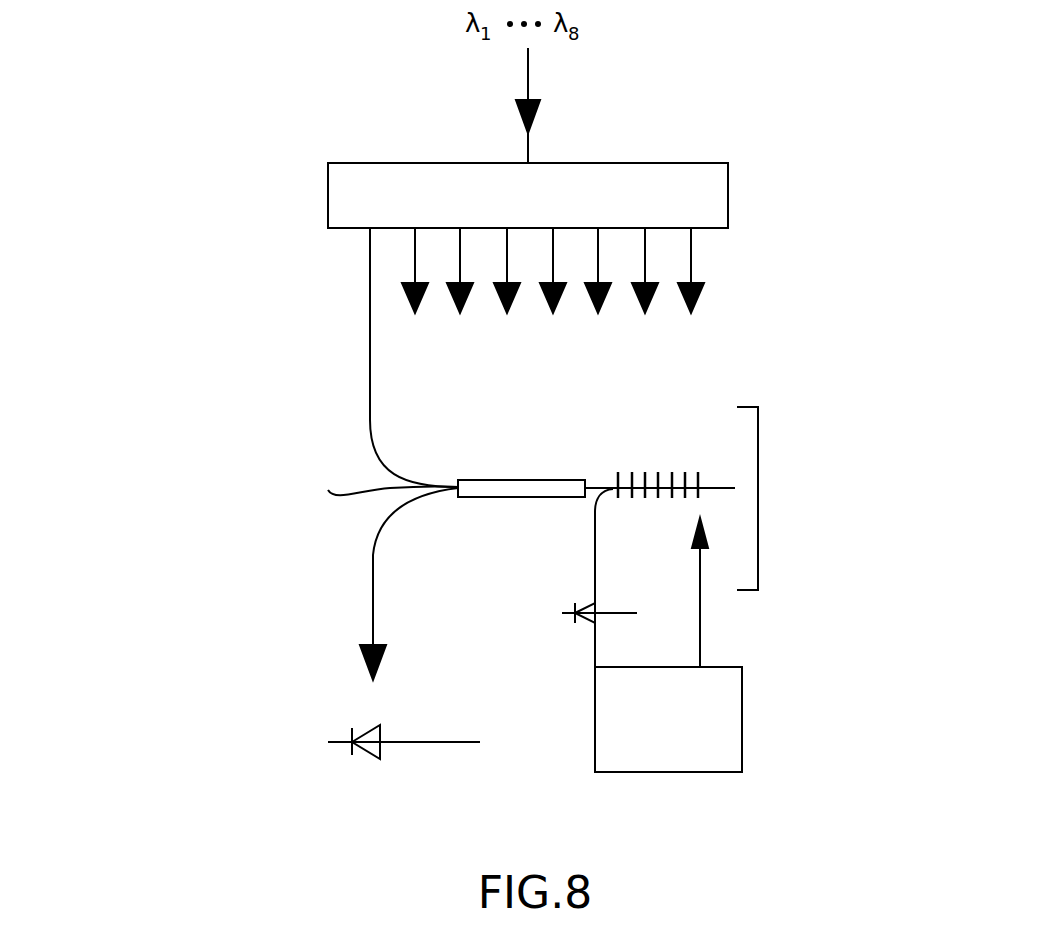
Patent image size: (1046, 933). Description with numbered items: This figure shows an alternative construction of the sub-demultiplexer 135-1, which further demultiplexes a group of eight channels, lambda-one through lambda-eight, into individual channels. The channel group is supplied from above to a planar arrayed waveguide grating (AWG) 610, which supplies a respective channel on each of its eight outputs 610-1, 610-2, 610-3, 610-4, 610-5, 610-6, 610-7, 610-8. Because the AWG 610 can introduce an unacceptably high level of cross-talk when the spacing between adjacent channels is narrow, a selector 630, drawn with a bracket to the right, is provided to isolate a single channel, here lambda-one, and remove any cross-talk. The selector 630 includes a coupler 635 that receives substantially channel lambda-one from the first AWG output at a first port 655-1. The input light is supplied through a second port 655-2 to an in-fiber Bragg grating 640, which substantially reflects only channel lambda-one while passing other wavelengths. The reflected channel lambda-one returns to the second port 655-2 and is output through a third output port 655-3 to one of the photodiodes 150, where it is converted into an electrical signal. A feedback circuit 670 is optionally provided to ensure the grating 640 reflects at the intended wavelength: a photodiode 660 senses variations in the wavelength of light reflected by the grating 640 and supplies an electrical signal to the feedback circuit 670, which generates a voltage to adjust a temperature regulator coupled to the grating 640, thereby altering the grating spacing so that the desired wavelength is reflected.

The planar arrayed waveguide grating (AWG) 610 is at (712, 188).
The output of the AWG 610-1 is at (367, 270).
The output of the AWG 610-2 is at (410, 250).
The output of the AWG 610-3 is at (457, 248).
The output of the AWG 610-4 is at (503, 250).
The output of the AWG 610-5 is at (550, 250).
The output of the AWG 610-6 is at (600, 248).
The output of the AWG 610-7 is at (645, 250).
The output of the AWG 610-8 is at (687, 258).
The first port of the coupler 655-1 is at (351, 494).
The second port of the coupler 655-2 is at (595, 480).
The third output port of the coupler 655-3 is at (448, 500).
The optical coupler 635 is at (512, 498).
The in-fiber Bragg grating 640 is at (652, 497).
The selector 630 is at (760, 520).
The photodiode 660 is at (587, 628).
The feedback circuit 670 is at (685, 772).
The photodiode 150 is at (330, 762).
The sub-demultiplexer 135-1 is at (240, 571).